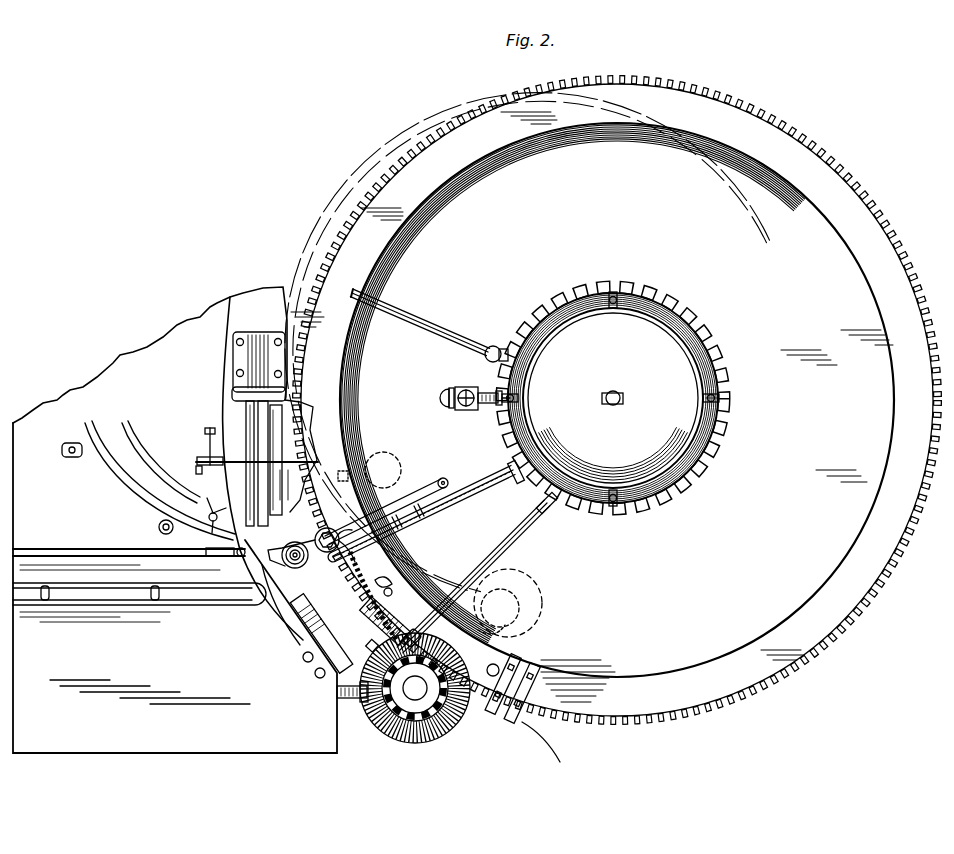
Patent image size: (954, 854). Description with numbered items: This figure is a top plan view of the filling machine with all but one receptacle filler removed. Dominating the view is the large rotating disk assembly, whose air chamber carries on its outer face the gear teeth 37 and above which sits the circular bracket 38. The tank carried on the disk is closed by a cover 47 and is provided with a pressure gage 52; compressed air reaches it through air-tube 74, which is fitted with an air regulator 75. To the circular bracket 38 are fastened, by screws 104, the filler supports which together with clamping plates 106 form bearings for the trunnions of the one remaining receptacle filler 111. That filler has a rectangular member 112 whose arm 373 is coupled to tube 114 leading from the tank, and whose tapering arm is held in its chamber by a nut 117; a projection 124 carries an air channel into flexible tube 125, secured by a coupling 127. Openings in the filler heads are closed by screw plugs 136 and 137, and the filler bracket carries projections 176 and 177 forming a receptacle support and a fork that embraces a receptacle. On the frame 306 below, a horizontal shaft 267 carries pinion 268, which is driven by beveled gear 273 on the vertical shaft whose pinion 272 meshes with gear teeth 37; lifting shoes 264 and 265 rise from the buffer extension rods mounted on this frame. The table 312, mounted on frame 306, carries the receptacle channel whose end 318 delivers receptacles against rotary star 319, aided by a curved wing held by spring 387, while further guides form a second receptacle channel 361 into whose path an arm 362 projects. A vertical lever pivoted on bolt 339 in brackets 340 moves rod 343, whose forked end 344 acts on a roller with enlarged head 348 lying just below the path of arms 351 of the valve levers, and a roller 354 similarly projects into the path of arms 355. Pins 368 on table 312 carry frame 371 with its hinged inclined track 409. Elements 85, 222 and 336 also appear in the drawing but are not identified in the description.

The gear teeth 37 is at (302, 274).
The circular bracket 38 is at (589, 397).
The cover 47 is at (613, 398).
The pressure gage 52 is at (624, 399).
The arm 85 is at (432, 325).
The air-tube 74 is at (480, 388).
The air regulator 75 is at (466, 410).
The table 312 is at (175, 520).
The projection (receptacle support) 176 is at (262, 600).
The projection (fork) 177 is at (278, 615).
The receptacle channel 361 is at (139, 585).
The arm 362 is at (243, 557).
The frame 306 is at (238, 396).
The slide plate 336 is at (246, 470).
The lifting shoe 264 is at (270, 430).
The lifting shoe 265 is at (282, 410).
The horizontal bolt 339 is at (205, 430).
The brackets 340 is at (200, 458).
The rod 343 is at (296, 466).
The forked end 344 is at (346, 470).
The enlarged head 348 is at (385, 452).
The end of receptacle channel 318 is at (160, 480).
The rotary star 319 is at (224, 519).
The spring 387 is at (158, 533).
The pivot pin 222 is at (442, 478).
The receptacle filler 111 is at (395, 525).
The coupling 127 is at (390, 535).
The tube 114 is at (460, 495).
The flexible tube 125 is at (432, 512).
The screw plug 136 is at (327, 528).
The screw plug 137 is at (305, 568).
The arm 373 is at (520, 532).
The projection 124 is at (410, 610).
The nut 117 is at (385, 580).
The rectangular member 112 is at (366, 626).
The inclined track 409 is at (312, 608).
The frame 371 is at (300, 643).
The pins 368 is at (318, 678).
The horizontal shaft 267 is at (340, 700).
The beveled gear 273 is at (442, 736).
The pinion 272 is at (462, 718).
The pinion 268 is at (376, 727).
The roller 354 is at (508, 599).
The arms 355 is at (500, 610).
The arms 351 is at (516, 624).
The screws 104 is at (535, 668).
The clamping plates 106 is at (555, 753).